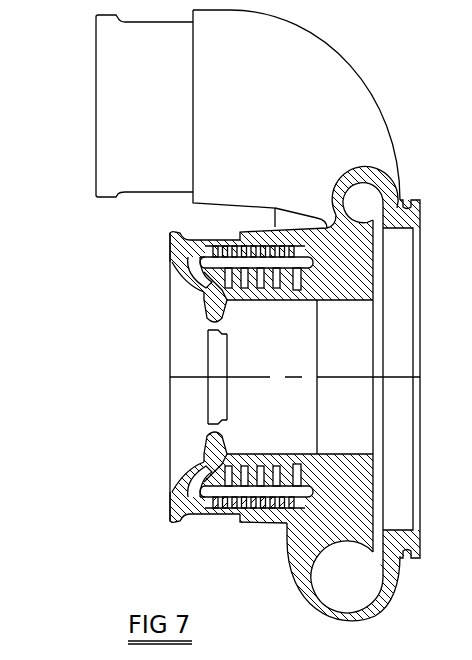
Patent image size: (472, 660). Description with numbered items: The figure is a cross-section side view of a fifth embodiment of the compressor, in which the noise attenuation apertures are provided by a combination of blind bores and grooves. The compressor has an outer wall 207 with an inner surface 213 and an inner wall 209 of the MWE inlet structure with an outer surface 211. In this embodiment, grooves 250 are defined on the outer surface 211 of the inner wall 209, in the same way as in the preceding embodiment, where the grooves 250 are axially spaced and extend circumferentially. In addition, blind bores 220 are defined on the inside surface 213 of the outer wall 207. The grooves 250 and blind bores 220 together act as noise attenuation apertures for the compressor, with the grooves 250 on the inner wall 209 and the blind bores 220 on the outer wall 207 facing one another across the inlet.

The blind bores 220 is at (212, 243).
The inner surface of the outer wall 213 is at (173, 266).
The grooves 250 is at (197, 288).
The inner wall 209 is at (210, 306).
The outer surface of the inner wall 211 is at (177, 504).
The outer wall 207 is at (210, 516).